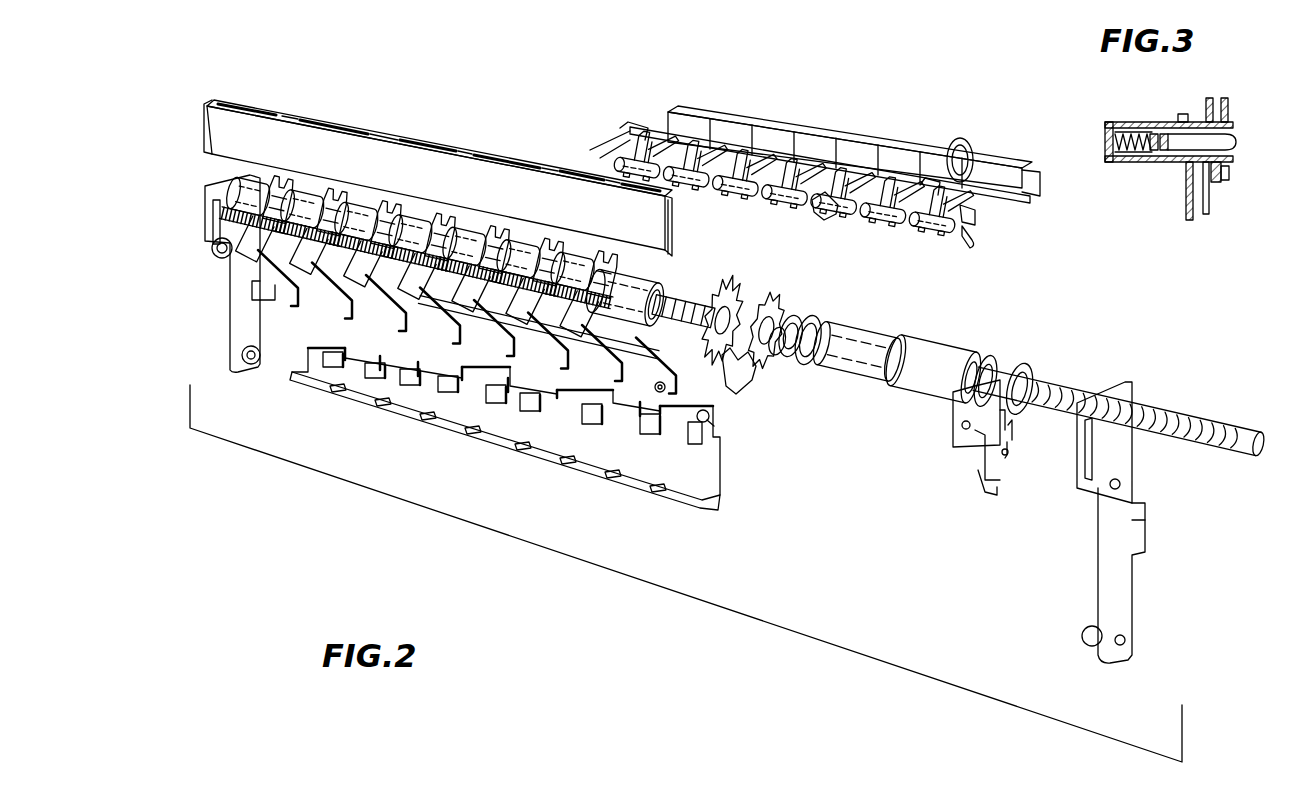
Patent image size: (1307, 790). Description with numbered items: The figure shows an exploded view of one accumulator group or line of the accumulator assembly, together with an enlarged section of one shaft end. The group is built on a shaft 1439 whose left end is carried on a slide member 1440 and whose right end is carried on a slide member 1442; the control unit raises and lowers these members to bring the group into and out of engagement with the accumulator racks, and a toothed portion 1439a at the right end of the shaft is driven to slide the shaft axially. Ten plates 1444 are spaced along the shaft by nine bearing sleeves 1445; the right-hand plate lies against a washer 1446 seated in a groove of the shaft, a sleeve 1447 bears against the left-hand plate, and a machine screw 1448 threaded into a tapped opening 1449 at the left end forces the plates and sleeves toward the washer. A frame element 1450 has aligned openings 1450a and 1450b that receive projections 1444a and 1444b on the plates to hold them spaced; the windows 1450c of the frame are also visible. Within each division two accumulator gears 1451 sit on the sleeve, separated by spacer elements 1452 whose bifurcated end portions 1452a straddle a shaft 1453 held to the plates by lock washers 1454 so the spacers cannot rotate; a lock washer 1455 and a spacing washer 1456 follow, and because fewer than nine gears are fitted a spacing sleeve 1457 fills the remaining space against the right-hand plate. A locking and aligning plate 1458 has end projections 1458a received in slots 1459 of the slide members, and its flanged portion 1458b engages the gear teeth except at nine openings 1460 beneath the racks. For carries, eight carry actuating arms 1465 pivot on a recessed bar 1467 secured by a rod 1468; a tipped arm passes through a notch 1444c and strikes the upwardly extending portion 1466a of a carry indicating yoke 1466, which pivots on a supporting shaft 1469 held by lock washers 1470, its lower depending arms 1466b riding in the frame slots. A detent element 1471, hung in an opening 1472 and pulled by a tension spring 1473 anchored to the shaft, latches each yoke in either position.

In FIG. 2, the shaft 1439 is at (700, 300).
In FIG. 3, the shaft 1439 is at (1178, 146).
In FIG. 2, the toothed portion 1439a is at (1135, 412).
In FIG. 2, the member 1440 is at (237, 300).
In FIG. 3, the member 1440 is at (1186, 210).
In FIG. 2, the member 1442 is at (1120, 583).
In FIG. 2, the plates 1444 is at (965, 432).
In FIG. 3, the plates 1444 is at (1209, 208).
In FIG. 2, the projections 1444a is at (735, 380).
In FIG. 2, the projections 1444b is at (495, 335).
In FIG. 2, the notch 1444c is at (1005, 432).
In FIG. 2, the bearing sleeves 1445 is at (910, 355).
In FIG. 2, the washer 1446 is at (1010, 370).
In FIG. 3, the sleeve 1447 is at (1132, 124).
In FIG. 3, the machine screw 1448 is at (1122, 156).
In FIG. 3, the tapped opening 1449 is at (1162, 138).
In FIG. 2, the frame element 1450 is at (720, 480).
In FIG. 2, the openings 1450a is at (340, 350).
In FIG. 2, the openings 1450b is at (345, 393).
In FIG. 2, the channel window 1450c is at (490, 445).
In FIG. 2, the accumulator gears 1451 is at (733, 302).
In FIG. 3, the accumulator gears 1451 is at (1224, 98).
In FIG. 2, the spacer elements 1452 is at (512, 338).
In FIG. 3, the spacer elements 1452 is at (1222, 184).
In FIG. 2, the bifurcated end portion 1452a is at (770, 372).
In FIG. 2, the shaft 1453 is at (640, 355).
In FIG. 2, the lock washers 1454 is at (662, 392).
In FIG. 2, the lock washer 1455 is at (790, 320).
In FIG. 2, the spacing washer 1456 is at (828, 340).
In FIG. 2, the spacing sleeve 1457 is at (615, 278).
In FIG. 2, the locking and aligning plate 1458 is at (234, 150).
In FIG. 2, the projecting portions 1458a is at (208, 118).
In FIG. 2, the flanged portion 1458b is at (236, 105).
In FIG. 2, the slots 1459 is at (226, 252).
In FIG. 2, the openings 1460 is at (300, 118).
In FIG. 2, the carry actuating arms 1465 is at (762, 128).
In FIG. 2, the carry indicating yokes 1466 is at (630, 162).
In FIG. 2, the upwardly extending portion 1466a is at (978, 218).
In FIG. 2, the lower depending arms 1466b is at (976, 244).
In FIG. 2, the recessed bar 1467 is at (1028, 200).
In FIG. 2, the rod 1468 is at (1034, 190).
In FIG. 2, the supporting shaft 1469 is at (590, 360).
In FIG. 2, the lock washers 1470 is at (712, 425).
In FIG. 2, the detent element 1471 is at (628, 138).
In FIG. 2, the opening 1472 is at (992, 437).
In FIG. 2, the tension spring 1473 is at (825, 214).